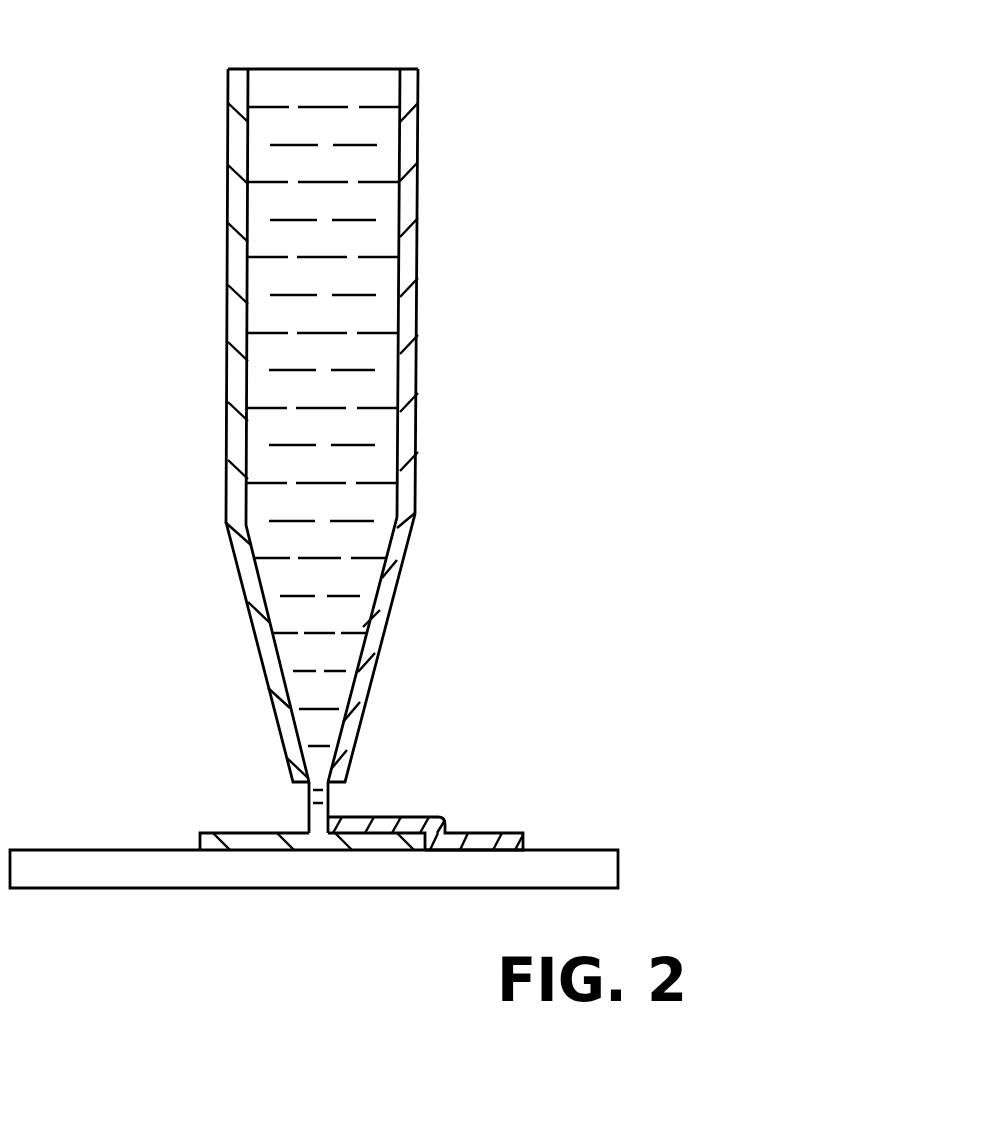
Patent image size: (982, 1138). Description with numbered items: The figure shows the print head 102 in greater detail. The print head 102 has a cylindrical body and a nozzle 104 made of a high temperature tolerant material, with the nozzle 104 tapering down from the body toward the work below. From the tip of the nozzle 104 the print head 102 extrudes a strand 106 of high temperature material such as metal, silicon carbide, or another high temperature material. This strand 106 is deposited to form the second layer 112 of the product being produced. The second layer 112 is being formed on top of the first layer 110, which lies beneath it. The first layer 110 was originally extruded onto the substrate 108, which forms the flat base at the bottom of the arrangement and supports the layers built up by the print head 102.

The print head 102 is at (522, 146).
The nozzle 104 is at (368, 690).
The strand 106 is at (308, 795).
The substrate 108 is at (583, 850).
The first layer 110 is at (230, 833).
The second layer 112 is at (423, 816).